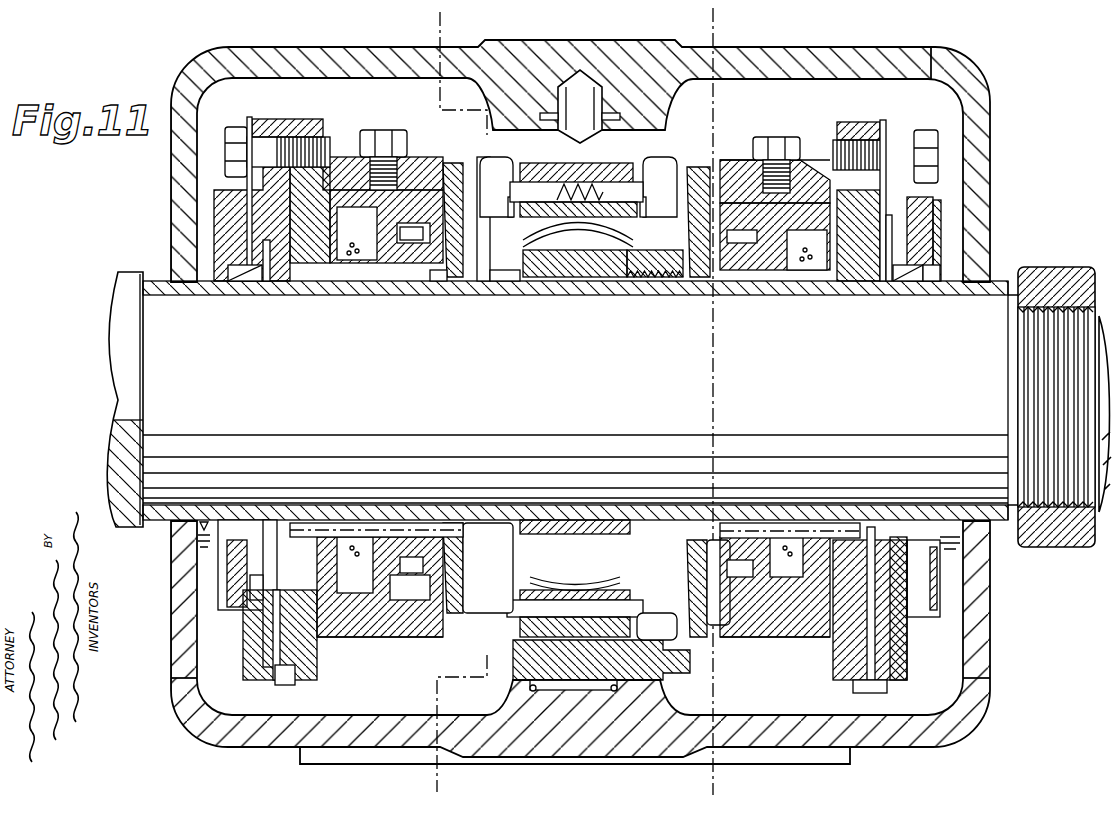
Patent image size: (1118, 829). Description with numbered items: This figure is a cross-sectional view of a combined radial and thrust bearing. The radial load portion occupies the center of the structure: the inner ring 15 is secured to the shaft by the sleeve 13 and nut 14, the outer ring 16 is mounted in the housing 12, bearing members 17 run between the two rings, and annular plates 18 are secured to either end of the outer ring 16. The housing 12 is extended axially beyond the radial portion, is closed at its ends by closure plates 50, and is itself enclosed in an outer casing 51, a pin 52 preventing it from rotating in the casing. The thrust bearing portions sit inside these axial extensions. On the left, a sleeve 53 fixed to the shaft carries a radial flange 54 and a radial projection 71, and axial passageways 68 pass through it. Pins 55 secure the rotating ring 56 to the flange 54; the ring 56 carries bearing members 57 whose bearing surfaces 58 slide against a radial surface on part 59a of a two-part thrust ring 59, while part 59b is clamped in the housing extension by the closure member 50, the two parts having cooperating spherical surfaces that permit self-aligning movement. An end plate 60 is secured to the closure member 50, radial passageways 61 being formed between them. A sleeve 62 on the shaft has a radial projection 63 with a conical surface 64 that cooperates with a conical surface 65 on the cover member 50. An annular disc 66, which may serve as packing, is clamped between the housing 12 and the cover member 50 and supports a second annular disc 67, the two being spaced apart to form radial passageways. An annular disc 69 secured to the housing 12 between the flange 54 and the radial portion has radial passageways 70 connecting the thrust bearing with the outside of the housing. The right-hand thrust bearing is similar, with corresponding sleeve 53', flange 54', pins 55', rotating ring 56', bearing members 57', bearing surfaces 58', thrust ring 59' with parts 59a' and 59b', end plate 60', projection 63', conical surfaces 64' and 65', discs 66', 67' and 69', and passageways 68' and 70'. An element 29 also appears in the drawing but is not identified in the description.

The housing 12 is at (728, 22).
The sleeve 13 is at (426, 22).
The nut 14 is at (668, 279).
The inner ring 15 is at (595, 278).
The outer ring 16 is at (640, 216).
The bearing members 17 is at (620, 248).
The annular plates 18 is at (510, 199).
The recess 29 is at (623, 617).
The closure plate 50 is at (237, 203).
The outer casing 51 is at (985, 112).
The pin 52 is at (580, 106).
The sleeve 53 is at (383, 243).
The sleeve 53' is at (775, 234).
The radial flange 54 is at (447, 298).
The radial flange 54' is at (742, 278).
The pins 55 is at (412, 275).
The pins 55' is at (746, 613).
The rotating ring 56 is at (401, 609).
The rotating ring 56' is at (793, 282).
The bearing members 57 is at (380, 599).
The bearing members 57' is at (775, 609).
The bearing surfaces 58 is at (312, 254).
The bearing surfaces 58' is at (858, 235).
The thrust ring 59 is at (286, 578).
The thrust ring 59' is at (870, 582).
The thrust ring part 59a is at (281, 220).
The thrust ring part 59a' is at (854, 237).
The thrust ring part 59b is at (293, 145).
The thrust ring part 59b' is at (872, 159).
The end plate 60 is at (209, 546).
The end plate 60' is at (979, 240).
The radial passageways 61 is at (230, 588).
The sleeve 62 is at (200, 290).
The radial projection 63 is at (243, 293).
The radial projection 63' is at (913, 296).
The conical surface 64 is at (248, 593).
The conical surface 64' is at (903, 603).
The conical surface 65 is at (233, 623).
The conical surface 65' is at (951, 296).
The annular disc 66 is at (292, 686).
The annular disc 66' is at (870, 688).
The annular disc 67 is at (264, 287).
The annular disc 67' is at (877, 274).
The axial passageways 68 is at (376, 508).
The axial passageways 68' is at (790, 508).
The annular disc 69 is at (411, 195).
The annular disc 69' is at (696, 194).
The radially extending passageways 70 is at (478, 590).
The radially extending passageways 70' is at (715, 612).
The radial projection 71 is at (513, 283).